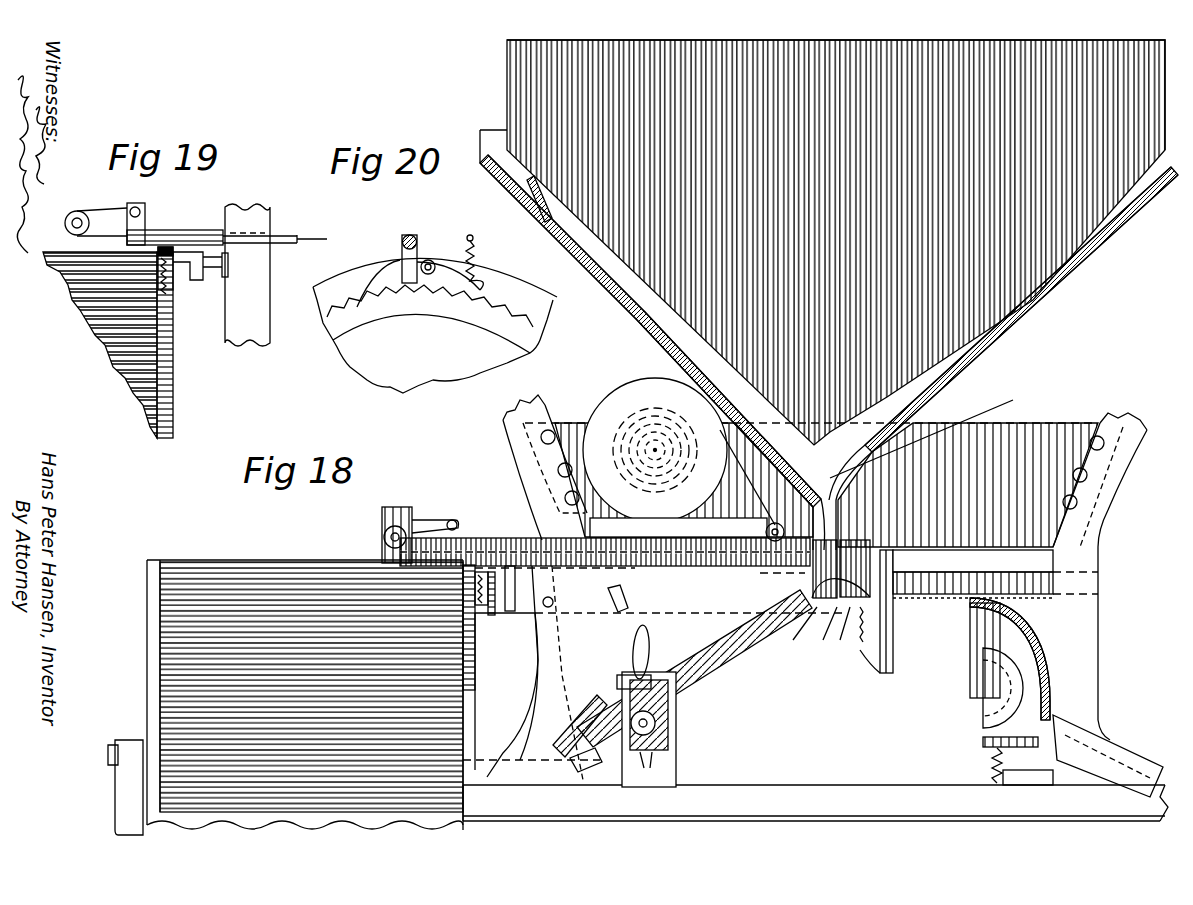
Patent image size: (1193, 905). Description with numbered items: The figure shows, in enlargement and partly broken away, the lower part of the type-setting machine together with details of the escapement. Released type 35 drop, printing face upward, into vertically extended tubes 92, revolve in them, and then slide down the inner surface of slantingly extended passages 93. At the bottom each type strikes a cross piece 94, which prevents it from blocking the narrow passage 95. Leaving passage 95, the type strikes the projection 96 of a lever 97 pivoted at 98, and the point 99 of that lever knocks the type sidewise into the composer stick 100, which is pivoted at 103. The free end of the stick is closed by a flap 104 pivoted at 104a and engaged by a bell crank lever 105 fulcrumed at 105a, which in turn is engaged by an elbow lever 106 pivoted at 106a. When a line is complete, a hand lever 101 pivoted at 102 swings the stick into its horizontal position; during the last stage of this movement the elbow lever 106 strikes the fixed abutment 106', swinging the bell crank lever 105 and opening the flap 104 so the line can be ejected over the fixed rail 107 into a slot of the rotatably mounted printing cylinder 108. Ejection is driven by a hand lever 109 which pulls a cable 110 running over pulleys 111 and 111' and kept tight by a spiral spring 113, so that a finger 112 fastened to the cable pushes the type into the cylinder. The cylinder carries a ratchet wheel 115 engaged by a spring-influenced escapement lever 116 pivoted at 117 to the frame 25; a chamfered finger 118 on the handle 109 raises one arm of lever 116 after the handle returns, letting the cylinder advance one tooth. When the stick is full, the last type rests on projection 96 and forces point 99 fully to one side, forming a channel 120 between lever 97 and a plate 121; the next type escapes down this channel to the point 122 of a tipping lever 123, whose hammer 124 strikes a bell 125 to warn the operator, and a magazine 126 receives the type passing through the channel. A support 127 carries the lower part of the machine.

In FIG. 19, the frame 25 is at (263, 337).
In FIG. 18, the frame 25 is at (523, 447).
In FIG. 18, the type 35 is at (548, 214).
In FIG. 18, the vertically extended tubes 92 is at (545, 81).
In FIG. 18, the slantingly extended passages 93 is at (636, 307).
In FIG. 18, the cross piece 94 is at (923, 410).
In FIG. 18, the narrow passage 95 is at (932, 433).
In FIG. 18, the projection 96 is at (806, 612).
In FIG. 18, the lever 97 is at (860, 645).
In FIG. 18, the pivot 98 is at (823, 640).
In FIG. 18, the point 99 is at (802, 594).
In FIG. 18, the composer stick 100 is at (788, 645).
In FIG. 18, the hand lever 101 is at (648, 646).
In FIG. 18, the pivot 102 is at (625, 680).
In FIG. 18, the pivot 103 is at (790, 600).
In FIG. 18, the flap 104 is at (560, 790).
In FIG. 18, the flap pivot 104a is at (620, 768).
In FIG. 18, the bell crank lever 105 is at (647, 766).
In FIG. 18, the fulcrum 105a is at (583, 718).
In FIG. 18, the elbow lever 106 is at (673, 729).
In FIG. 18, the pivot 106a is at (677, 722).
In FIG. 18, the fixed abutment 106' is at (613, 592).
In FIG. 18, the fixed rail 107 is at (585, 538).
In FIG. 19, the printing cylinder 108 is at (110, 365).
In FIG. 20, the printing cylinder 108 is at (365, 356).
In FIG. 18, the printing cylinder 108 is at (227, 550).
In FIG. 19, the hand lever 109 is at (158, 230).
In FIG. 20, the hand lever 109 is at (413, 245).
In FIG. 18, the hand lever 109 is at (480, 536).
In FIG. 19, the cable 110 is at (100, 210).
In FIG. 18, the cable 110 is at (433, 522).
In FIG. 19, the pulley 111 is at (45, 223).
In FIG. 18, the pulley 111 is at (374, 542).
In FIG. 18, the pulley 111' is at (752, 485).
In FIG. 18, the finger 112 is at (707, 540).
In FIG. 18, the spiral spring 113 is at (633, 410).
In FIG. 19, the ratchet wheel 115 is at (170, 388).
In FIG. 20, the ratchet wheel 115 is at (390, 307).
In FIG. 18, the ratchet wheel 115 is at (475, 718).
In FIG. 20, the escapement lever 116 is at (478, 292).
In FIG. 18, the escapement lever 116 is at (495, 545).
In FIG. 19, the pivot 117 is at (210, 270).
In FIG. 20, the pivot 117 is at (432, 261).
In FIG. 19, the chamfered finger 118 is at (175, 288).
In FIG. 20, the chamfered finger 118 is at (402, 262).
In FIG. 18, the chamfered finger 118 is at (527, 550).
In FIG. 18, the channel 120 is at (836, 608).
In FIG. 18, the plate 121 is at (893, 576).
In FIG. 18, the point 122 is at (1065, 748).
In FIG. 18, the tipping lever 123 is at (995, 768).
In FIG. 18, the hammer 124 is at (983, 742).
In FIG. 18, the bell 125 is at (983, 700).
In FIG. 18, the magazine 126 is at (1143, 753).
In FIG. 18, the support 127 is at (815, 803).